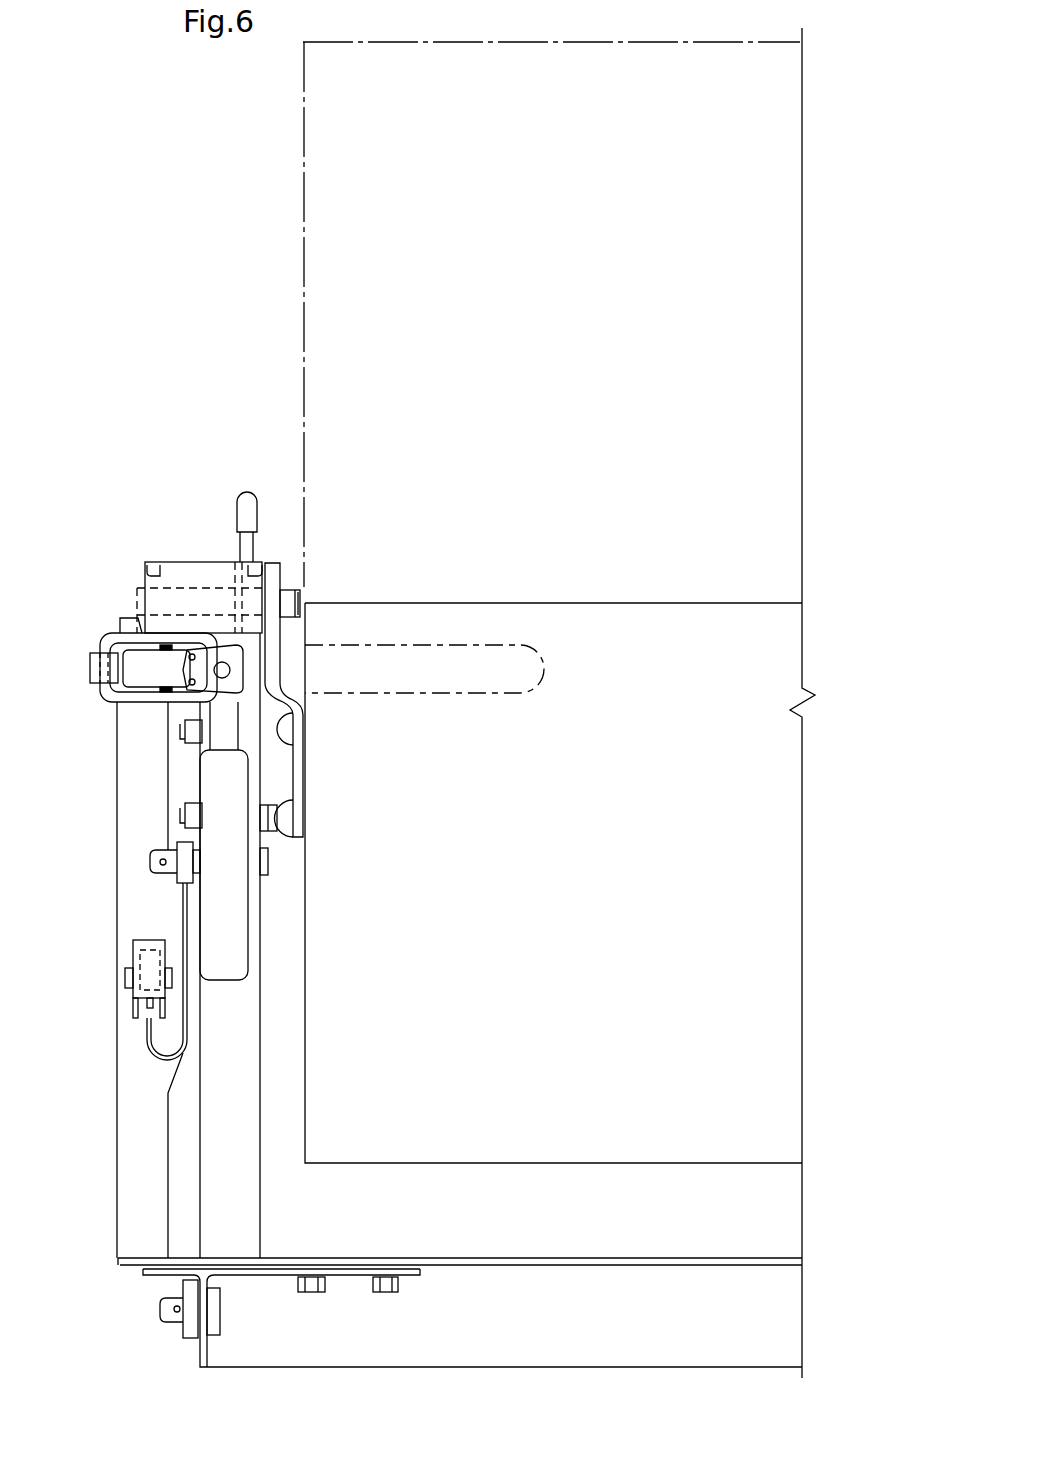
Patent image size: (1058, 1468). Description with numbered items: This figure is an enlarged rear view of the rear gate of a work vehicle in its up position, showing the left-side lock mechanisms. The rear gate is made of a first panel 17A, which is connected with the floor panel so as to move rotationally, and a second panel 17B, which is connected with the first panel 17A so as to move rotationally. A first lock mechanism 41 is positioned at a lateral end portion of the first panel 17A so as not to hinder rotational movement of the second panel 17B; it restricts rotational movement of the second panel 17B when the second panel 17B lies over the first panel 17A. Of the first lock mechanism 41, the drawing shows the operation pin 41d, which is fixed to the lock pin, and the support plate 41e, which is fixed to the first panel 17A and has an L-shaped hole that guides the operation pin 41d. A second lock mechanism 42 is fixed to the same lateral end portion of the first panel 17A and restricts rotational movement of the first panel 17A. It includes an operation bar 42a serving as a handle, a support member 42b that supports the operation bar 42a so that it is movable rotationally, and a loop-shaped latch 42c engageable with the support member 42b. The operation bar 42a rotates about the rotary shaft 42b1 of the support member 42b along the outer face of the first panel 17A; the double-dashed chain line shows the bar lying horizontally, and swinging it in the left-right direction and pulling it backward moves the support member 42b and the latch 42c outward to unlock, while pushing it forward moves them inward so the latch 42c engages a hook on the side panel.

The first panel 17A is at (777, 932).
The second panel 17B is at (306, 185).
The first lock mechanism 41 is at (211, 530).
The operation pin 41d is at (250, 507).
The support plate 41e is at (183, 567).
The second lock mechanism 42 is at (314, 913).
The operation bar 42a is at (243, 967).
The support member 42b is at (147, 678).
The rotary shaft 42b1 is at (228, 675).
The loop-shaped latch 42c is at (100, 640).